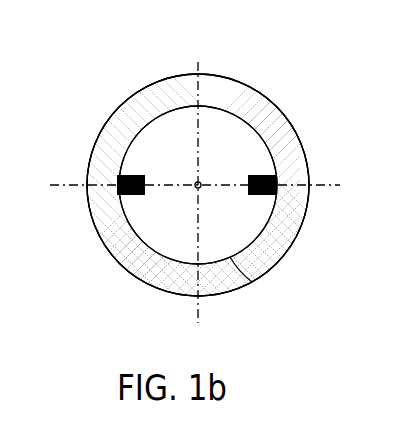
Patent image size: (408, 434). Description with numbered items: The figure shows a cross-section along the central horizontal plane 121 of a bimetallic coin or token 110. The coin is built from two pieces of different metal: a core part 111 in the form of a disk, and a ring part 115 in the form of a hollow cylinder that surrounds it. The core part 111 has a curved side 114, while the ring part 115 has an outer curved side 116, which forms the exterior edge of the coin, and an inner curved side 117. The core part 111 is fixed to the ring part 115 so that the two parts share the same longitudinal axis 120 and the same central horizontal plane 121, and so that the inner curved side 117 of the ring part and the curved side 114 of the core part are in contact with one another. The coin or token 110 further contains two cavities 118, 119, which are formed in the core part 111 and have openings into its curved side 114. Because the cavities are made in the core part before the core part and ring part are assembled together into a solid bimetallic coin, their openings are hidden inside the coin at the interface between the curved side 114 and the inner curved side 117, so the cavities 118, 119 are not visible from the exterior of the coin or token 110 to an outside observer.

The bimetallic coin or token 110 is at (142, 56).
The core part 111 is at (207, 122).
The curved side 114 is at (303, 294).
The ring part 115 is at (213, 90).
The outer curved side 116 is at (295, 238).
The inner curved side 117 is at (252, 282).
The cavity 118 is at (138, 196).
The cavity 119 is at (252, 175).
The longitudinal axis 120 is at (189, 178).
The central horizontal plane 121 is at (176, 177).